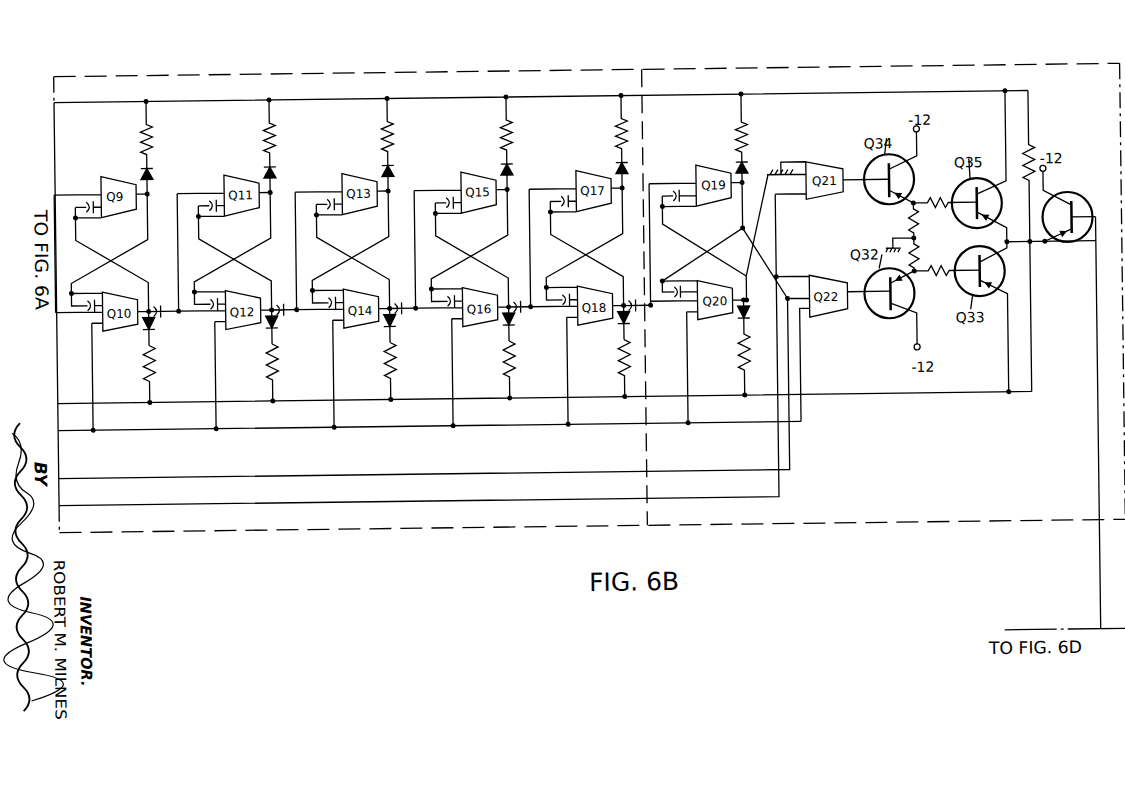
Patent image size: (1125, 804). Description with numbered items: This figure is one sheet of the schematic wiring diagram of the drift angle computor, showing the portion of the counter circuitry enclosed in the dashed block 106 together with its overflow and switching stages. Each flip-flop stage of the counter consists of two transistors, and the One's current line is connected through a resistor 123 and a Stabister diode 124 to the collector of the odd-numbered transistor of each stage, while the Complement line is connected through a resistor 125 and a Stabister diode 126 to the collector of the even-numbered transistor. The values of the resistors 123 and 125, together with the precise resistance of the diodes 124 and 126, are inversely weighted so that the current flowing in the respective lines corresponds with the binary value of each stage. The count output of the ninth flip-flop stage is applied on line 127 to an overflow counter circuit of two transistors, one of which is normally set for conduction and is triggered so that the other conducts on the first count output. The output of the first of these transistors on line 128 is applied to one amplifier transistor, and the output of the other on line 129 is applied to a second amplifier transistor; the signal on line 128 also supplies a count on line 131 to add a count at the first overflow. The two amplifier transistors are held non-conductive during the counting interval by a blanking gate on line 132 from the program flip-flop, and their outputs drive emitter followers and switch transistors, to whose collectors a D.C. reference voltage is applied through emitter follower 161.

The counter circuit portion 106 is at (856, 72).
The resistor 123 is at (543, 130).
The Stabister diode 124 is at (532, 168).
The resistor 125 is at (567, 369).
The Stabister diode 126 is at (567, 324).
The count output line 127 is at (643, 310).
The output line of transistor Q19 128 is at (739, 232).
The output line of transistor Q20 129 is at (745, 311).
The count line 131 is at (784, 475).
The blanking gate line 132 is at (774, 502).
The emitter follower 161 is at (1077, 208).